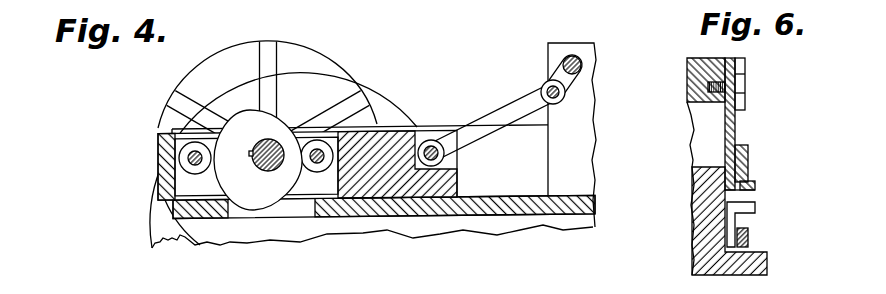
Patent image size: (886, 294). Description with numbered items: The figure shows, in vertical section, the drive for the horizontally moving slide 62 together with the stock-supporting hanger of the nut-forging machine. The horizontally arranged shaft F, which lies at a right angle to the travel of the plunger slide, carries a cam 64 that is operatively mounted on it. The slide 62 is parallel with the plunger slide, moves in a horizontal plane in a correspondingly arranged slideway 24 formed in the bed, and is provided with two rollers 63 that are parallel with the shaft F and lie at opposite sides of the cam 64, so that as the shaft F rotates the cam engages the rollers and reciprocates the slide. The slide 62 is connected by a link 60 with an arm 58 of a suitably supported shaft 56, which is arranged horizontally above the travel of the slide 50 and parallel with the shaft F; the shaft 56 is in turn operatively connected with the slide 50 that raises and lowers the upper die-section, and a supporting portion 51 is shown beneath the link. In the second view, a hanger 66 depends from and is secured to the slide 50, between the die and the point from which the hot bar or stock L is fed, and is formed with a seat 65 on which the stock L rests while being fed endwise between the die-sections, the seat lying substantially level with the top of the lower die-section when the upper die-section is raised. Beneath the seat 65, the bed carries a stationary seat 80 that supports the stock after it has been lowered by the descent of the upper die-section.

In FIG. 4, the slideway 24 is at (393, 198).
In FIG. 4, the supporting post 51 is at (502, 222).
In FIG. 4, the shaft 56 is at (581, 59).
In FIG. 4, the arm 58 is at (557, 80).
In FIG. 4, the link 60 is at (487, 116).
In FIG. 4, the slide 62 is at (388, 140).
In FIG. 4, the rollers 63 is at (316, 140).
In FIG. 4, the cam 64 is at (238, 117).
In FIG. 4, the shaft F is at (268, 167).
In FIG. 6, the slide 50 is at (687, 84).
In FIG. 6, the hanger 66 is at (735, 127).
In FIG. 6, the hot bar or stock L is at (740, 146).
In FIG. 6, the seat 65 is at (750, 168).
In FIG. 6, the stationary seat 80 is at (749, 210).